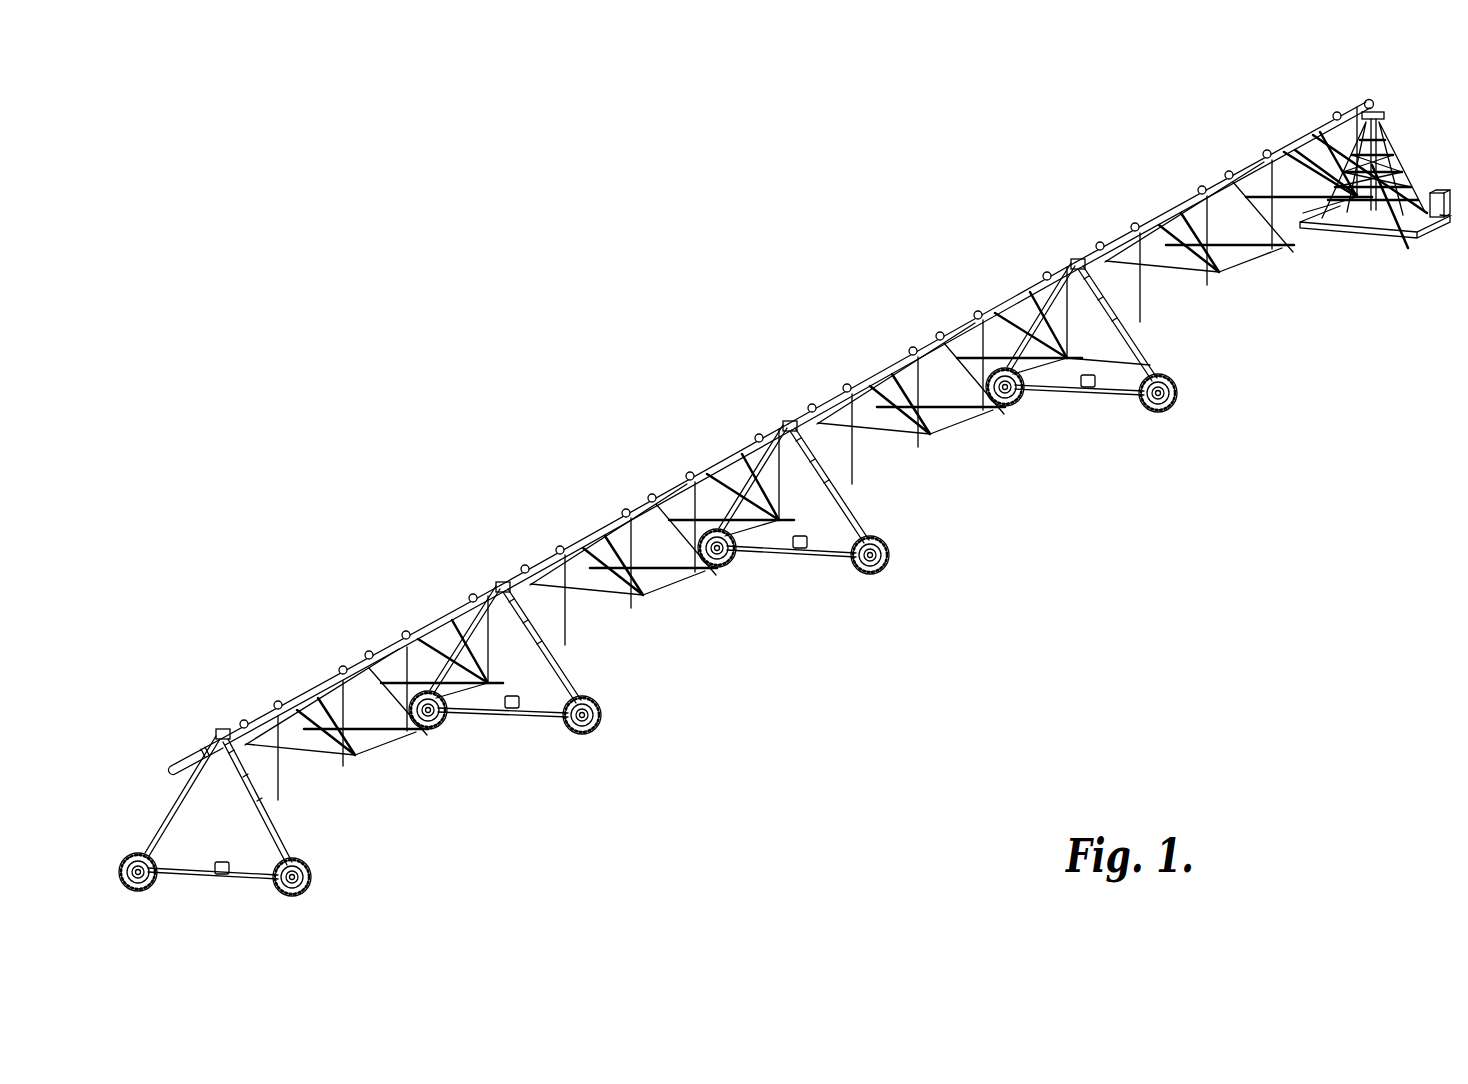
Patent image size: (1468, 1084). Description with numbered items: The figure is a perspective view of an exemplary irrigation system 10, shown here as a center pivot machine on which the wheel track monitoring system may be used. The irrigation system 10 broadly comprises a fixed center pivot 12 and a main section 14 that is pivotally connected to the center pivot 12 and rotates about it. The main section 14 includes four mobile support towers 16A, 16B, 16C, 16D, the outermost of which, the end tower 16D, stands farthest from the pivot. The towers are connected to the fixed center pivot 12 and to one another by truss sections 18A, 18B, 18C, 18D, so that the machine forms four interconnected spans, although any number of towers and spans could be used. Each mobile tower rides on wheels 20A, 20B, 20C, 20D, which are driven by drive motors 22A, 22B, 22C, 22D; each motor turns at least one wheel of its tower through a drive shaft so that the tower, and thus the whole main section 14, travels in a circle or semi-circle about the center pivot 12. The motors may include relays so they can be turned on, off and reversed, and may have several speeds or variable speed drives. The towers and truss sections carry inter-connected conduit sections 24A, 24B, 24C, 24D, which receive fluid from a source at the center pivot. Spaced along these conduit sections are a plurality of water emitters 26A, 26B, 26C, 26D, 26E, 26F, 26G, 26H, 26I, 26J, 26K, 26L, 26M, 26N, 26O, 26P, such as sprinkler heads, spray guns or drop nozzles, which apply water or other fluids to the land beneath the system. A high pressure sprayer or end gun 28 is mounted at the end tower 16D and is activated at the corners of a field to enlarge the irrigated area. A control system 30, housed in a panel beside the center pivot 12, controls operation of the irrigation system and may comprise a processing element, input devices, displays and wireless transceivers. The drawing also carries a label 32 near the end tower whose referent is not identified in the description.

The irrigation system 10 is at (612, 290).
The center pivot 12 is at (1412, 124).
The main section 14 is at (893, 233).
The mobile support tower 16A is at (1108, 216).
The mobile support tower 16B is at (817, 382).
The mobile support tower 16C is at (525, 560).
The end tower 16D is at (240, 716).
The truss section 18A is at (1322, 267).
The truss section 18B is at (984, 447).
The truss section 18C is at (740, 585).
The truss section 18D is at (398, 760).
The wheel 20A is at (1012, 401).
The wheel 20B is at (730, 561).
The wheel 20C is at (442, 726).
The wheel 20D is at (313, 880).
The drive motor 22A is at (1093, 389).
The drive motor 22B is at (806, 549).
The drive motor 22C is at (519, 713).
The drive motor 22D is at (226, 881).
The conduit section 24A is at (1330, 137).
The conduit section 24B is at (1010, 302).
The conduit section 24C is at (735, 465).
The conduit section 24D is at (385, 660).
The water emitter 26A is at (1403, 237).
The water emitter 26B is at (1268, 252).
The water emitter 26C is at (1208, 277).
The water emitter 26D is at (1142, 324).
The water emitter 26E is at (1152, 366).
The water emitter 26F is at (996, 422).
The water emitter 26G is at (919, 449).
The water emitter 26H is at (854, 486).
The water emitter 26I is at (762, 528).
The water emitter 26J is at (684, 577).
The water emitter 26K is at (632, 607).
The water emitter 26L is at (568, 622).
The water emitter 26M is at (492, 679).
The water emitter 26N is at (404, 740).
The water emitter 26O is at (342, 772).
The water emitter 26P is at (280, 799).
The end gun 28 is at (172, 758).
The control system 30 is at (1440, 191).
The end tower coupling 32 is at (216, 716).